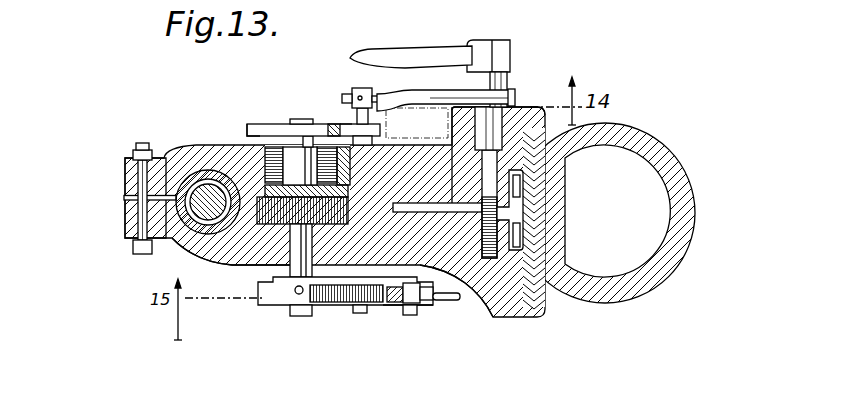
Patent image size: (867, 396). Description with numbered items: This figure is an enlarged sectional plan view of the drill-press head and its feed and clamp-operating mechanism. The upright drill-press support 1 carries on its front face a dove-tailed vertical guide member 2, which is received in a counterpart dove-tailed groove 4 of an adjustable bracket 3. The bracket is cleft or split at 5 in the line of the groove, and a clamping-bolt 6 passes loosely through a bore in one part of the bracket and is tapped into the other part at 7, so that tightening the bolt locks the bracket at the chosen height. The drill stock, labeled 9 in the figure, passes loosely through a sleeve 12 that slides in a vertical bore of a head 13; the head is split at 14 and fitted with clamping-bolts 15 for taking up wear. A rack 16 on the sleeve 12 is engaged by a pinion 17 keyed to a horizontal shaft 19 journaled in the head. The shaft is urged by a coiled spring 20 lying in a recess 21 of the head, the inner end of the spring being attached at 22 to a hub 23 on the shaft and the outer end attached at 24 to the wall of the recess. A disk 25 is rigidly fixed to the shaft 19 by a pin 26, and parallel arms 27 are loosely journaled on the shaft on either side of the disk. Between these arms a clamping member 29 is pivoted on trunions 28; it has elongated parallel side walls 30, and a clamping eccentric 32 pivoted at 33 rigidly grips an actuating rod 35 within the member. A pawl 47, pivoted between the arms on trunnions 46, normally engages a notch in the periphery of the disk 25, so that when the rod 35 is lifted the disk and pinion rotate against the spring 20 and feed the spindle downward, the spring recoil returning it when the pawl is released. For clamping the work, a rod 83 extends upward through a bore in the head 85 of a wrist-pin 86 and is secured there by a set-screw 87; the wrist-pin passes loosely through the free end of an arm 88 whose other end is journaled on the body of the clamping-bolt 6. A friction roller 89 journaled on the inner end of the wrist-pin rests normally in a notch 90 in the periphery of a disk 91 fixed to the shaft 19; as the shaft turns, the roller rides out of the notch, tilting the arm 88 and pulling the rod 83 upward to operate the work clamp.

The upright drill-press support 1 is at (686, 176).
The dove-tailed vertical guide member 2 is at (526, 262).
The adjustable bracket 3 is at (432, 163).
The dove-tailed groove 4 is at (510, 115).
The cleft 5 is at (442, 204).
The clamping-bolt 6 is at (493, 85).
The tapped portion 7 is at (486, 258).
The pivot pin 9 is at (196, 180).
The sleeve 12 is at (170, 165).
The head 13 is at (206, 186).
The split 14 is at (127, 201).
The clamping-bolts 15 is at (140, 255).
The rack 16 is at (236, 262).
The pinion 17 is at (262, 262).
The horizontal shaft 19 is at (293, 316).
The coiled spring 20 is at (276, 130).
The recess 21 is at (252, 170).
The spring inner end attachment 22 is at (320, 132).
The hub 23 is at (305, 168).
The spring outer end attachment 24 is at (333, 130).
The disk 25 is at (273, 299).
The pin 26 is at (308, 268).
The parallel arms 27 is at (397, 305).
The trunions 28 is at (411, 315).
The clamping member 29 is at (430, 288).
The side walls 30 is at (419, 265).
The clamping eccentric 32 is at (440, 300).
The eccentric pivot 33 is at (432, 306).
The actuating rod 35 is at (390, 303).
The trunnions 46 is at (357, 313).
The pawl 47 is at (337, 300).
The rod 83 is at (406, 103).
The head of wrist-pin 85 is at (372, 120).
The wrist-pin 86 is at (385, 147).
The set-screw 87 is at (347, 99).
The arm 88 is at (433, 112).
The friction roller 89 is at (378, 108).
The notch 90 is at (333, 133).
The disk 91 is at (257, 124).